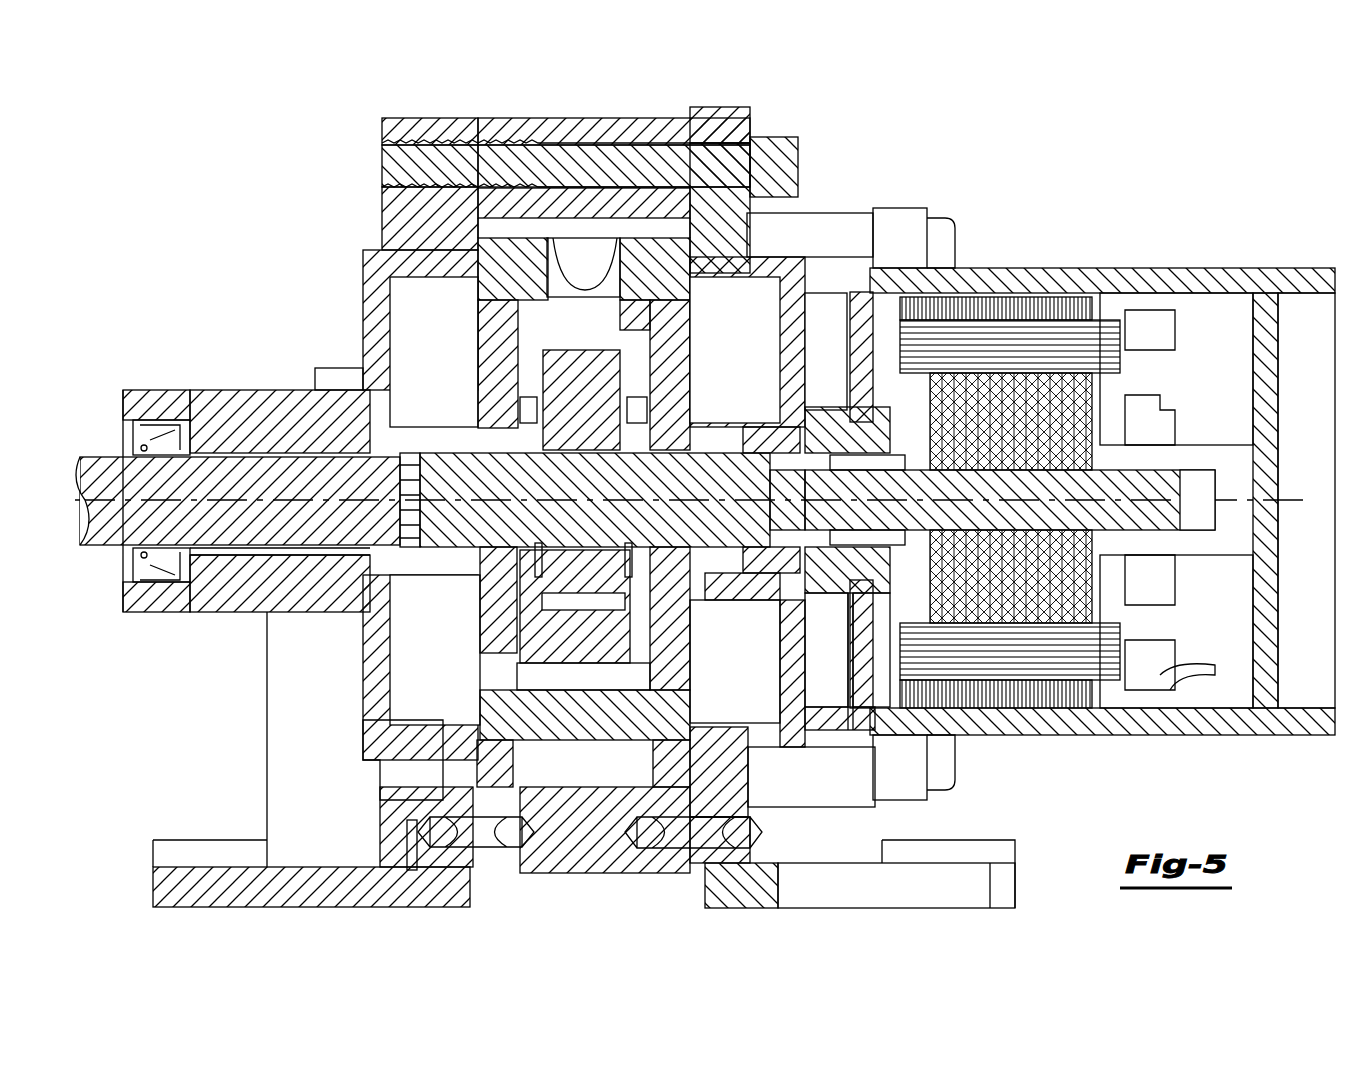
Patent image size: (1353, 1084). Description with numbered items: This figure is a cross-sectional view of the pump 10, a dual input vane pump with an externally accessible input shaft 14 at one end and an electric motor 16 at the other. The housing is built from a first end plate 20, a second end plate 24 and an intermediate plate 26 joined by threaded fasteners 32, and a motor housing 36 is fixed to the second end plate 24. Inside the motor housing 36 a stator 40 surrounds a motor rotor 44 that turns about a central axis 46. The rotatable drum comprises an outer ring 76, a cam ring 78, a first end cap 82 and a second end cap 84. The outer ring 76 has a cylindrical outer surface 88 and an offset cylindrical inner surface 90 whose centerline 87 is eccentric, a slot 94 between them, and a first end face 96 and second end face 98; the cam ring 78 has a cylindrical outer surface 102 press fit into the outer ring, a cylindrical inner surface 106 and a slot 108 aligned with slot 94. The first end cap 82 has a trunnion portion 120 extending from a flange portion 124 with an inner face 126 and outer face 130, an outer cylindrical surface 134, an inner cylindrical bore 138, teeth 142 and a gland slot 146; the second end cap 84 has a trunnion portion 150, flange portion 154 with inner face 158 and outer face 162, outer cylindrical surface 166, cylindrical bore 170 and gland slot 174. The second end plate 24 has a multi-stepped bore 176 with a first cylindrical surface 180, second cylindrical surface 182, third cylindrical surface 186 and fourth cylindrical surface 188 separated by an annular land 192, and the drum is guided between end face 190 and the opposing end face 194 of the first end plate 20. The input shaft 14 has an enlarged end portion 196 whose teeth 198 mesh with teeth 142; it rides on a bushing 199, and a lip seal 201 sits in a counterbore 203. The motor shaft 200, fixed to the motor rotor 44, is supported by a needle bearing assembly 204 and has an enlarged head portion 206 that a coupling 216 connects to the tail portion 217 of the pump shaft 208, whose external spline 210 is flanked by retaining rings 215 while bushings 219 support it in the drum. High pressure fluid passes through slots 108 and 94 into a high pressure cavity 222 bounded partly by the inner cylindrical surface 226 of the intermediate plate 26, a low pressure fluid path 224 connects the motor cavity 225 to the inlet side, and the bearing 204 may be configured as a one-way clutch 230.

The pump 10 is at (1050, 135).
The input shaft 14 is at (105, 450).
The electric motor 16 is at (1205, 262).
The first end plate 20 is at (375, 266).
The second end plate 24 is at (755, 175).
The intermediate plate 26 is at (612, 128).
The threaded fasteners 32 is at (660, 172).
The motor housing 36 is at (1120, 268).
The stator 40 is at (1035, 300).
The motor rotor 44 is at (1075, 405).
The central axis 46 is at (667, 455).
The outer ring 76 is at (470, 247).
The cam ring 78 is at (537, 310).
The first end cap 82 is at (480, 357).
The second end cap 84 is at (688, 420).
The centerline 87 is at (600, 450).
The cylindrical outer surface 88 is at (500, 225).
The cylindrical inner surface 90 is at (713, 263).
The slot 94 is at (560, 275).
The first end face 96 is at (500, 250).
The second end face 98 is at (753, 217).
The cylindrical outer surface 102 is at (543, 228).
The cylindrical inner surface 106 is at (537, 337).
The slot 108 is at (550, 335).
The trunnion portion 120 is at (437, 427).
The flange portion 124 is at (493, 375).
The inner face 126 is at (507, 392).
The outer face 130 is at (478, 285).
The outer cylindrical surface 134 is at (420, 587).
The inner cylindrical bore 138 is at (417, 517).
The teeth 142 is at (387, 440).
The slot 146 is at (503, 670).
The trunnion portion 150 is at (730, 435).
The flange portion 154 is at (683, 632).
The inner face 158 is at (630, 637).
The outer face 162 is at (672, 677).
The outer cylindrical surface 166 is at (713, 427).
The cylindrical bore 170 is at (677, 520).
The slot 174 is at (730, 687).
The multi-stepped bore 176 is at (860, 530).
The first cylindrical surface 180 is at (650, 633).
The second cylindrical surface 182 is at (772, 455).
The third cylindrical surface 186 is at (832, 463).
The fourth cylindrical surface 188 is at (837, 450).
The end face 190 is at (667, 247).
The annular land 192 is at (813, 593).
The end face 194 is at (505, 232).
The enlarged end portion 196 is at (370, 443).
The teeth 198 is at (420, 497).
The bushing 199 is at (203, 450).
The motor shaft 200 is at (1060, 509).
The lip seal 201 is at (148, 575).
The counterbore 203 is at (187, 573).
The needle bearing assembly 204 is at (907, 600).
The enlarged head portion 206 is at (806, 452).
The pump shaft 208 is at (530, 512).
The external spline 210 is at (560, 455).
The retaining rings 215 is at (537, 557).
The coupling 216 is at (770, 593).
The tail portion 217 is at (758, 433).
The bushings 219 is at (795, 520).
The high pressure cavity 222 is at (607, 249).
The low pressure fluid path 224 is at (790, 320).
The motor cavity 225 is at (1242, 337).
The inner cylindrical surface 226 is at (557, 770).
The one-way clutch 230 is at (877, 560).